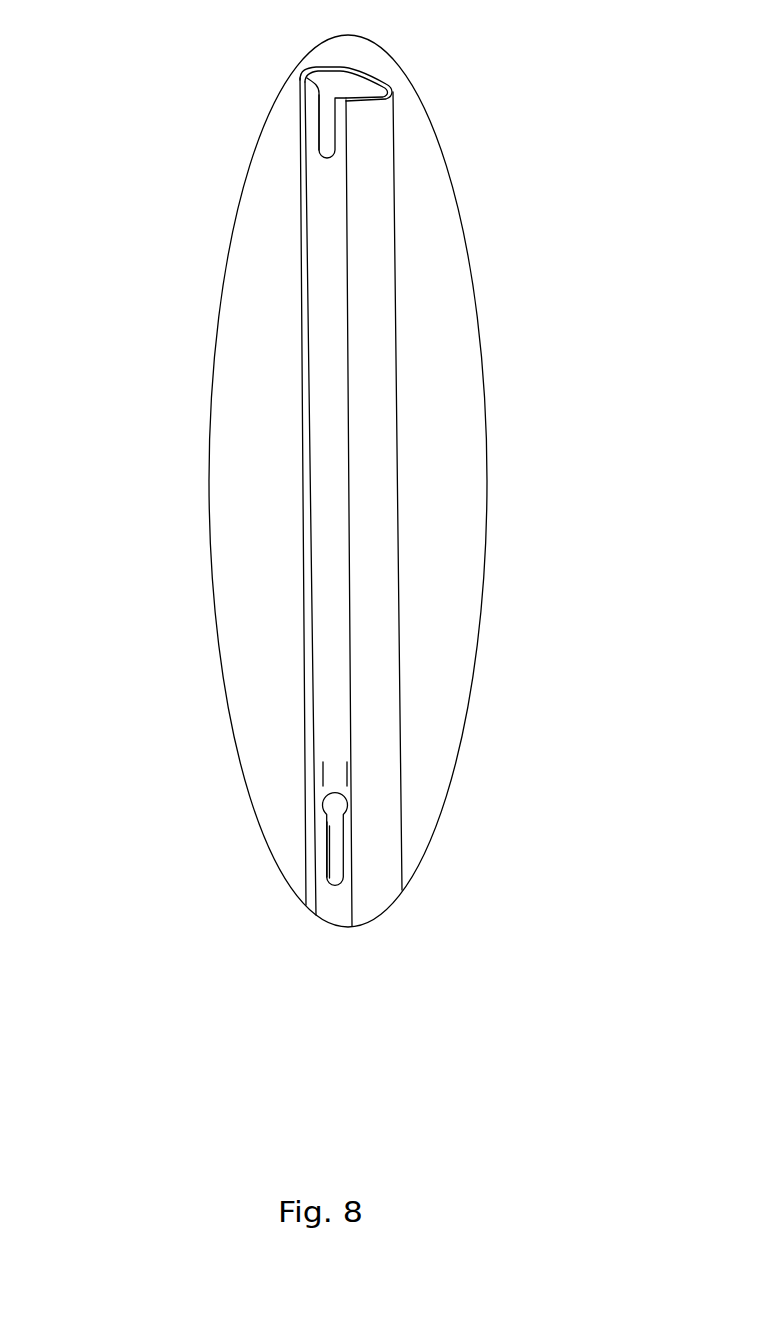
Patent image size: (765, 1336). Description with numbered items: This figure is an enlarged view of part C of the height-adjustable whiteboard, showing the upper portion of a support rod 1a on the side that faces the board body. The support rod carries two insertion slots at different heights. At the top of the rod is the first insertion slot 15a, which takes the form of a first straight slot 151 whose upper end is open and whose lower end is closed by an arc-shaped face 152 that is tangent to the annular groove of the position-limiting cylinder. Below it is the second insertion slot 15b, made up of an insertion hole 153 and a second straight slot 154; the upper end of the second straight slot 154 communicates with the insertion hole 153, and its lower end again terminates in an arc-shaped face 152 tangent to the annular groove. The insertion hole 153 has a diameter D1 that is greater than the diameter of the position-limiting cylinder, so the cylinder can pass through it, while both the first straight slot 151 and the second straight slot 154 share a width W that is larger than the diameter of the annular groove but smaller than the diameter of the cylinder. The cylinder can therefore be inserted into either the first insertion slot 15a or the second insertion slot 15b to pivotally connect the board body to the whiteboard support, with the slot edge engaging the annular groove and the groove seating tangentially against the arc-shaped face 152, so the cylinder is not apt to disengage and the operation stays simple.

The tube body 1a is at (372, 328).
The part C is at (485, 455).
The first insertion slot 15a is at (203, 116).
The second insertion slot 15b is at (192, 852).
The first straight slot 151 is at (326, 113).
The arc-shaped face 152 is at (320, 143).
The insertion hole 153 is at (335, 805).
The second straight slot 154 is at (335, 837).
The width of the first straight slot and the second straight slot W is at (319, 134).
The diameter of the insertion hole D1 is at (323, 784).